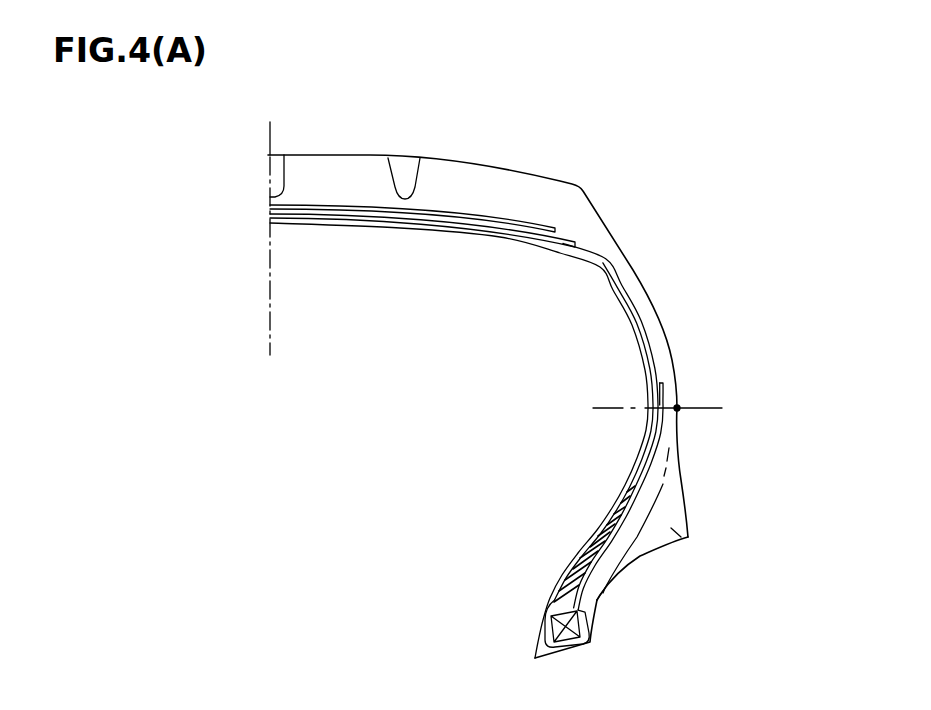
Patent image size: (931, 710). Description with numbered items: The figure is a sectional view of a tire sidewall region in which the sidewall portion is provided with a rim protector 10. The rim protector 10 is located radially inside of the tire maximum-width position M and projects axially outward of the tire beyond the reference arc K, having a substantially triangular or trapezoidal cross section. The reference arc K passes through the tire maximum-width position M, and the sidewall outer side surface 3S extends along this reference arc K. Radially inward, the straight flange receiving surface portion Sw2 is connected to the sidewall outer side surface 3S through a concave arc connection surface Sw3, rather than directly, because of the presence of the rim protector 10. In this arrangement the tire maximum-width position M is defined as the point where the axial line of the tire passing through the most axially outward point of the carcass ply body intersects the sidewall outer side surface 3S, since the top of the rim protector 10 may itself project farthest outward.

The tire maximum-width position M is at (677, 408).
The reference arc K is at (665, 483).
The sidewall outer side surface 3S is at (688, 523).
The rim protector 10 is at (685, 538).
The concave arc connection surface Sw3 is at (672, 532).
The flange receiving surface portion Sw2 is at (605, 588).